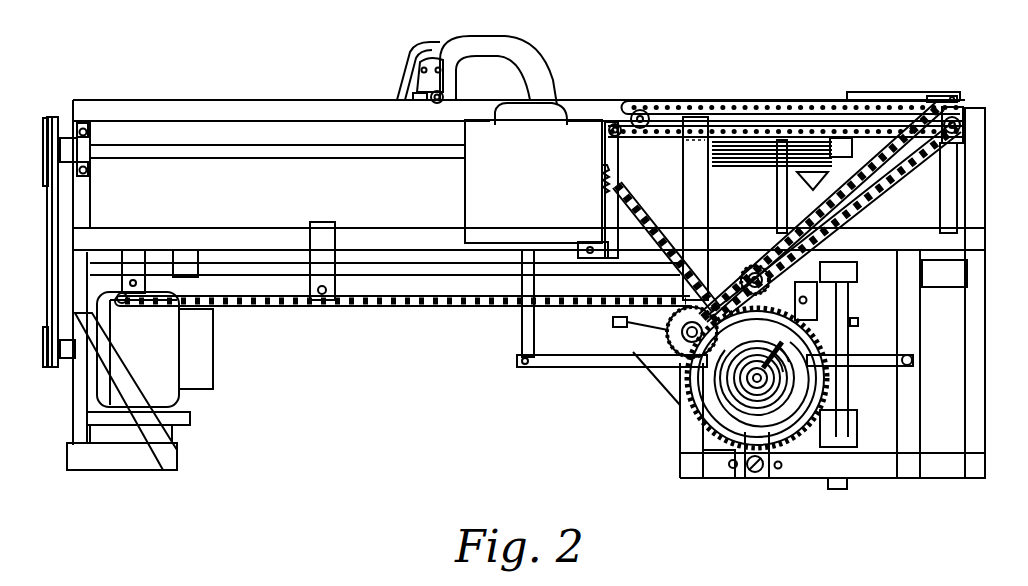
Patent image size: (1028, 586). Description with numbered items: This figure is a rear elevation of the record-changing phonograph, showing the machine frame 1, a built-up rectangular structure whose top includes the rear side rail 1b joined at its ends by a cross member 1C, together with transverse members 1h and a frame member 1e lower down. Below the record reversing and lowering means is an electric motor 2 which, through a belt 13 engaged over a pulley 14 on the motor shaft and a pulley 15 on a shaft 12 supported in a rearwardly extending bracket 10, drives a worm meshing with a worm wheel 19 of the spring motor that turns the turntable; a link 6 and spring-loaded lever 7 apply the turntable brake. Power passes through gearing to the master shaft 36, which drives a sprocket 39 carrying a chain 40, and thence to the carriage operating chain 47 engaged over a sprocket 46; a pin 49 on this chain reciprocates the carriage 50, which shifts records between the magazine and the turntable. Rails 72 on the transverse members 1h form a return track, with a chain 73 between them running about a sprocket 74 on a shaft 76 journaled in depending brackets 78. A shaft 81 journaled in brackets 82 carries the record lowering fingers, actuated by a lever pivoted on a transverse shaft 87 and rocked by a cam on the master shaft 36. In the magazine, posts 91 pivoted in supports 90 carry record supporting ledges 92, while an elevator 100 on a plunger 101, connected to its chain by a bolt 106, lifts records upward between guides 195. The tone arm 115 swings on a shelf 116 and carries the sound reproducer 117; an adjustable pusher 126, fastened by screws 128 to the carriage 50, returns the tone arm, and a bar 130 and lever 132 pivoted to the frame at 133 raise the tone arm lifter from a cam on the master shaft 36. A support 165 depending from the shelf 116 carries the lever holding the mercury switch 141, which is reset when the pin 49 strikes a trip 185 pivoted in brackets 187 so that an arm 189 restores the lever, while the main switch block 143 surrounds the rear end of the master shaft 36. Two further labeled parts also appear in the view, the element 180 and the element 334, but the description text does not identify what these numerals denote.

The frame 1 is at (985, 388).
The rear side rail 1b is at (293, 108).
The cross member 1C is at (73, 101).
The transverse member 1h is at (195, 250).
The frame member 1e is at (690, 446).
The electric motor 2 is at (144, 381).
The link 6 is at (733, 166).
The lever 7 is at (777, 187).
The bracket 10 is at (92, 147).
The shaft 12 is at (355, 150).
The belt 13 is at (47, 240).
The pulley 14 is at (44, 348).
The pulley 15 is at (44, 163).
The worm wheel 19 is at (621, 190).
The master element or master shaft 36 is at (757, 385).
The sprocket 39 is at (757, 245).
The chain 40 is at (865, 207).
The sprocket 46 is at (668, 103).
The carriage operating chain 47 is at (806, 126).
The pin 49 is at (963, 114).
The carriage 50 is at (742, 102).
The rails 72 is at (440, 268).
The chain 73 is at (418, 310).
The sprocket 74 is at (136, 306).
The shaft 76 is at (130, 278).
The brackets 78 is at (140, 250).
The shaft 81 is at (322, 296).
The brackets 82 is at (328, 255).
The transverse shaft 87 is at (733, 469).
The supports 90 is at (852, 432).
The posts 91 is at (842, 394).
The record supporting ledges 92 is at (815, 180).
The elevator 100 is at (752, 176).
The plunger 101 is at (852, 294).
The bolt 106 is at (858, 322).
The tone arm 115 is at (540, 85).
The shelf 116 is at (450, 110).
The sound reproducer or sound box 117 is at (402, 76).
The pusher 126 is at (884, 98).
The screws 128 is at (937, 100).
The bar 130 is at (536, 327).
The lever 132 is at (598, 362).
The pivot 133 is at (912, 357).
The auxiliary or mercury switch 141 is at (580, 243).
The block 143 is at (712, 395).
The support 165 is at (466, 189).
The guide 180 is at (930, 163).
The trip 185 is at (641, 128).
The brackets 187 is at (617, 124).
The arm 189 is at (617, 162).
The guides 195 is at (960, 210).
The drive sprocket 334 is at (690, 332).